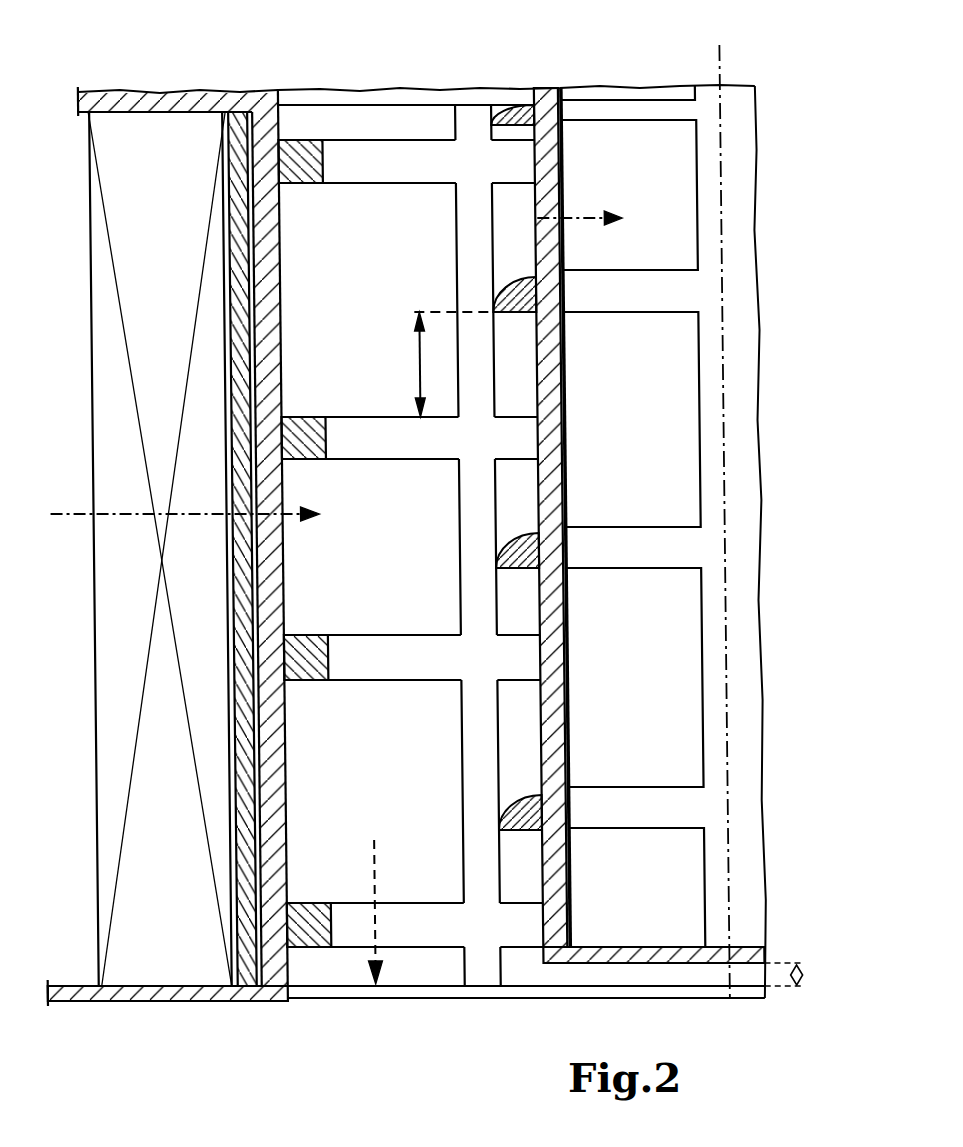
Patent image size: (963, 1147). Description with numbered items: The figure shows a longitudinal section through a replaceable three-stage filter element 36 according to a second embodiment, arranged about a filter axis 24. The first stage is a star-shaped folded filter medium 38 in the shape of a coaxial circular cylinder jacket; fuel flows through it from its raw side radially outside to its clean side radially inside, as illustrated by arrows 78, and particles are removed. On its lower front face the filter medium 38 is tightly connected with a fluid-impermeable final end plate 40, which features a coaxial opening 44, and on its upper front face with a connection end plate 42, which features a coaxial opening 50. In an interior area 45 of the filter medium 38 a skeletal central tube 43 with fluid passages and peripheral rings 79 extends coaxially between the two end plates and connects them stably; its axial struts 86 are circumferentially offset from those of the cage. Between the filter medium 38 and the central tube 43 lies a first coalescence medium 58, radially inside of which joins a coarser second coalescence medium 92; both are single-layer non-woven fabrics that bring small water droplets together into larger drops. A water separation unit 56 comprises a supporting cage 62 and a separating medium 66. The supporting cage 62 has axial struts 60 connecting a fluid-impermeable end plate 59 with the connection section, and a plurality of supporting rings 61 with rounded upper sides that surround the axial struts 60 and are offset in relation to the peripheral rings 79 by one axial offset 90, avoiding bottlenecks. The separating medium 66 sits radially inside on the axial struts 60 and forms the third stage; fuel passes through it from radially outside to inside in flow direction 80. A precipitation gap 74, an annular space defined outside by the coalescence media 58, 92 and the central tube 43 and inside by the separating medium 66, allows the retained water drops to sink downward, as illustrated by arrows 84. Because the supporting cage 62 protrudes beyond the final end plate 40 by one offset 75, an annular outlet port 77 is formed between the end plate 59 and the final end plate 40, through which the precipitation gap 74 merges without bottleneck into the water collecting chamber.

The filter axis 24 is at (721, 167).
The filter element 36 is at (55, 106).
The filter medium 38 is at (142, 163).
The final end plate 40 is at (63, 986).
The connection end plate 42 is at (163, 104).
The central tube 43 is at (460, 565).
The opening 44 is at (315, 993).
The interior area 45 is at (295, 827).
The opening 50 is at (336, 103).
The water separation unit 56 is at (770, 477).
The first coalescence medium 58 is at (242, 785).
The end plate 59 is at (754, 924).
The axial struts 60 is at (540, 100).
The supporting rings 61 is at (650, 108).
The supporting cage 62 is at (759, 714).
The separating medium 66 is at (680, 380).
The precipitation gap 74 is at (321, 862).
The offset 75 is at (790, 968).
The outlet port 77 is at (430, 968).
The arrows 78 is at (180, 498).
The peripheral rings 79 is at (401, 150).
The flow direction 80 is at (587, 216).
The arrows 84 is at (371, 877).
The axial struts 86 is at (476, 238).
The axial offset 90 is at (415, 372).
The second coalescence medium 92 is at (273, 292).